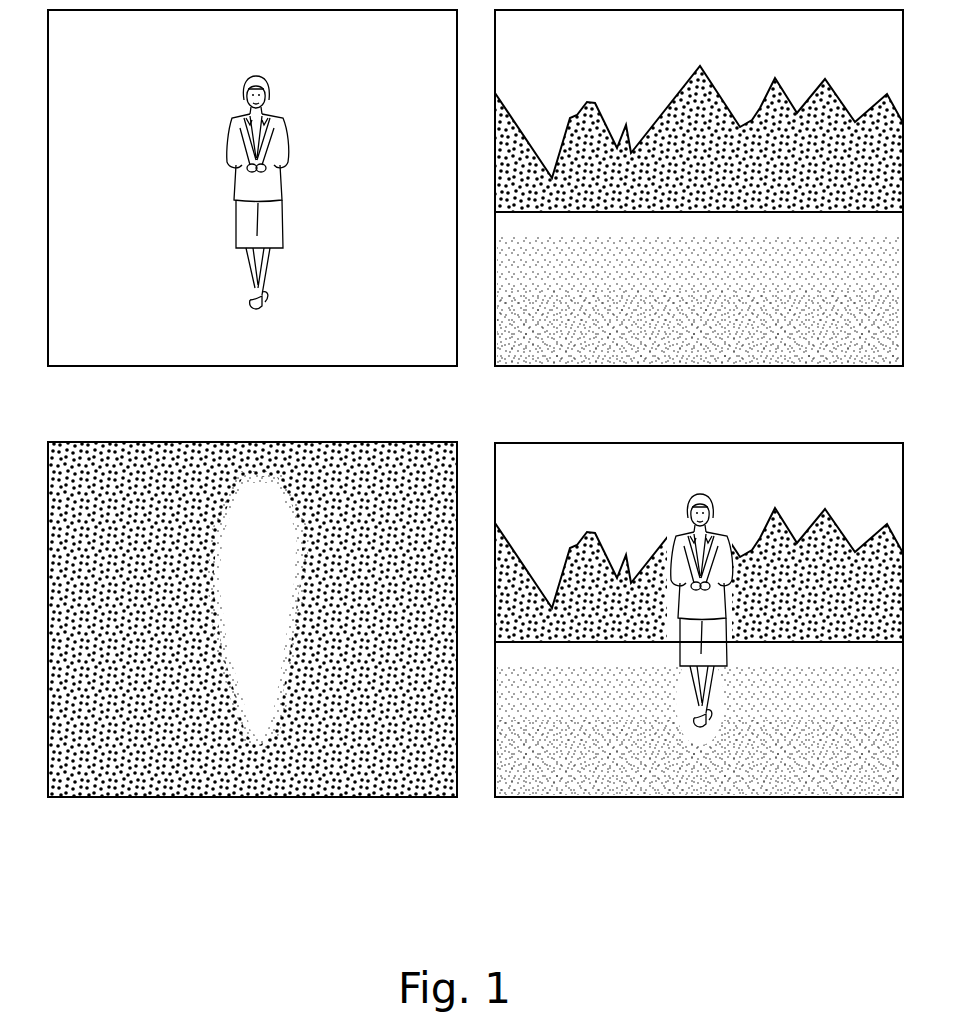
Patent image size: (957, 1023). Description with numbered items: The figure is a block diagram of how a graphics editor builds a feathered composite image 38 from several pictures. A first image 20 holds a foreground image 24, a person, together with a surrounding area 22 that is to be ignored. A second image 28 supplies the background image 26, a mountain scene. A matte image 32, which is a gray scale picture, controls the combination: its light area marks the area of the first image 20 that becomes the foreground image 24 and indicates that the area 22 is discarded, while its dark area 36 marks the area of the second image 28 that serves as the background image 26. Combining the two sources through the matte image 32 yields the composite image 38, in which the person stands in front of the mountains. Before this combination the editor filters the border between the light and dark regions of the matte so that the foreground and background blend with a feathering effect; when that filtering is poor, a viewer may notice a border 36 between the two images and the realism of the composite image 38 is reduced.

The first image 20 is at (252, 212).
The ignored area of the first image 22 is at (400, 293).
The foreground image 24 is at (289, 121).
The background image 26 is at (512, 115).
The second image 28 is at (699, 212).
The matte image 32 is at (252, 641).
The dark area of the matte image 36 is at (433, 775).
The composite image 38 is at (610, 797).